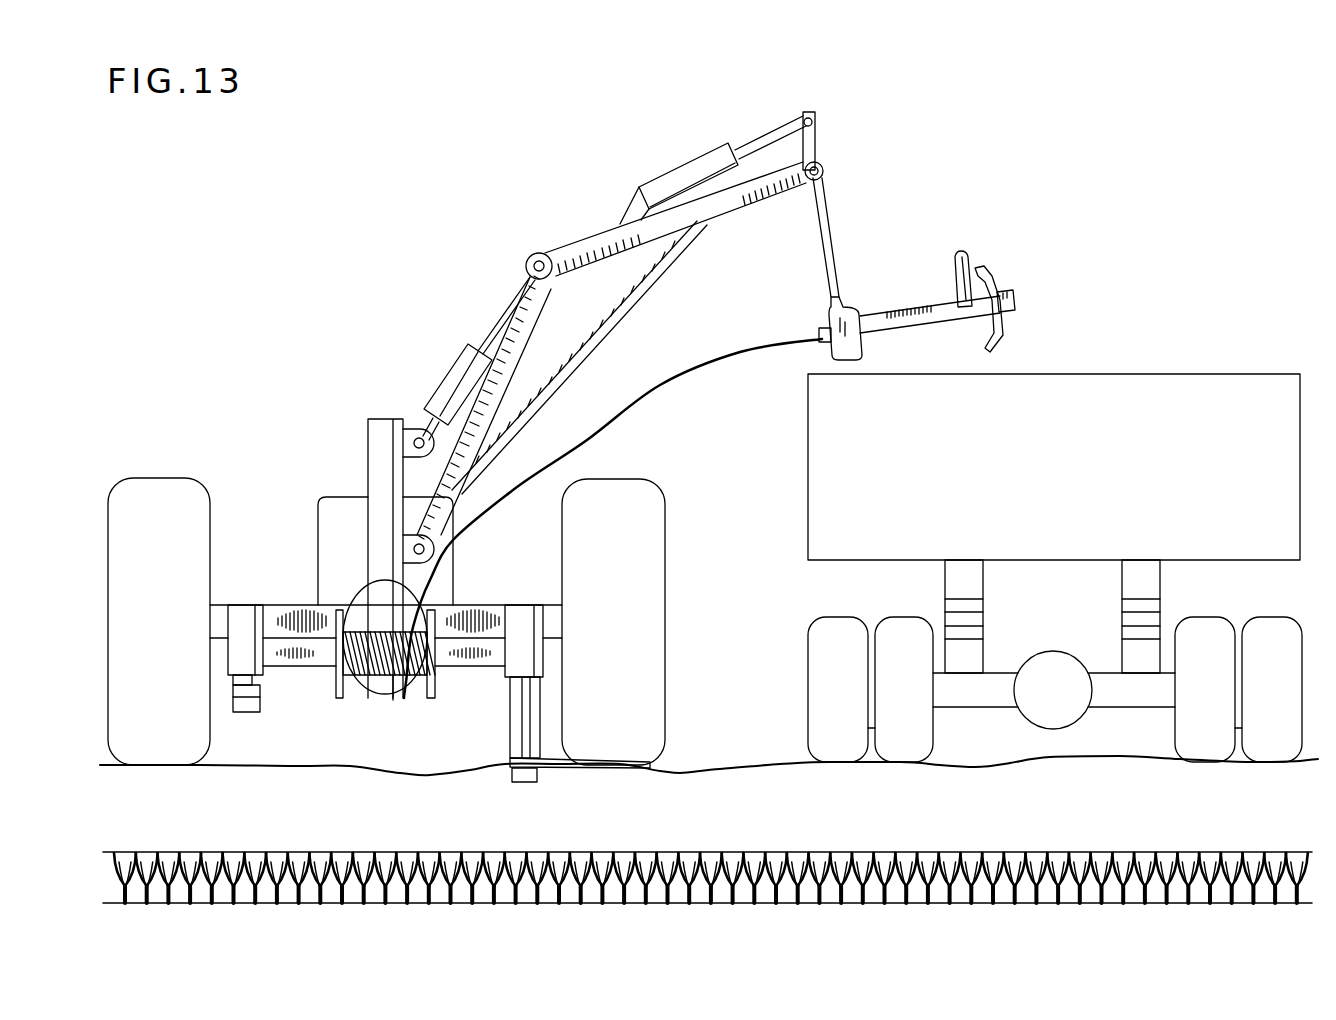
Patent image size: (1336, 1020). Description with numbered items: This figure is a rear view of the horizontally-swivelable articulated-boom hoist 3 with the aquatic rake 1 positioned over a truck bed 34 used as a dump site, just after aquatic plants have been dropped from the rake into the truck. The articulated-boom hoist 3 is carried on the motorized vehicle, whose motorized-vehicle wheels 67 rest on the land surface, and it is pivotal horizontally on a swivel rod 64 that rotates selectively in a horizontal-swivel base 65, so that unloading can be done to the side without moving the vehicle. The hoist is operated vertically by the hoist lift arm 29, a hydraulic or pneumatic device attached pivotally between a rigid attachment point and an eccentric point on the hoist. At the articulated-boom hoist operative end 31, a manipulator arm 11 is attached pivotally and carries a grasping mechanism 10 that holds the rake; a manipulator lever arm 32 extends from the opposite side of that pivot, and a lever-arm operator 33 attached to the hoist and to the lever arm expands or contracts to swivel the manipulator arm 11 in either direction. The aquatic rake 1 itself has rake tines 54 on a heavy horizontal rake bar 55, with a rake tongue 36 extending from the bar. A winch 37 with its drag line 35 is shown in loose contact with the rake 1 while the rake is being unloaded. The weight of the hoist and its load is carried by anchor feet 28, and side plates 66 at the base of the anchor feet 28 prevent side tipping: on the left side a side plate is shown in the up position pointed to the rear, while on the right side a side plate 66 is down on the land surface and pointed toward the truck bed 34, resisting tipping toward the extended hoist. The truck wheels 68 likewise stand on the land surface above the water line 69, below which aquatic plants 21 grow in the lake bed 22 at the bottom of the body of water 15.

The aquatic rake 1 is at (1018, 217).
The articulated-boom hoist 3 is at (470, 217).
The grasping mechanism 10 is at (833, 312).
The manipulator arm 11 is at (823, 226).
The body of water 15 is at (956, 830).
The aquatic plants 21 is at (891, 830).
The lake bed 22 is at (826, 830).
The anchor feet 28 is at (247, 713).
The hoist lift arm 29 is at (452, 370).
The articulated-boom hoist operative end 31 is at (823, 165).
The manipulator lever arm 32 is at (820, 120).
The lever-arm operator 33 is at (707, 158).
The truck bed 34 is at (1140, 373).
The drag line 35 is at (633, 407).
The rake tongue 36 is at (892, 318).
The winch 37 is at (412, 690).
The rake tines 54 is at (990, 268).
The horizontal rake bar 55 is at (1015, 302).
The swivel rod 64 is at (377, 480).
The horizontal-swivel base 65 is at (377, 593).
The side plates 66 is at (262, 693).
The motorized-vehicle wheels 67 is at (158, 495).
The truck wheels 68 is at (888, 663).
The water line 69 is at (752, 830).